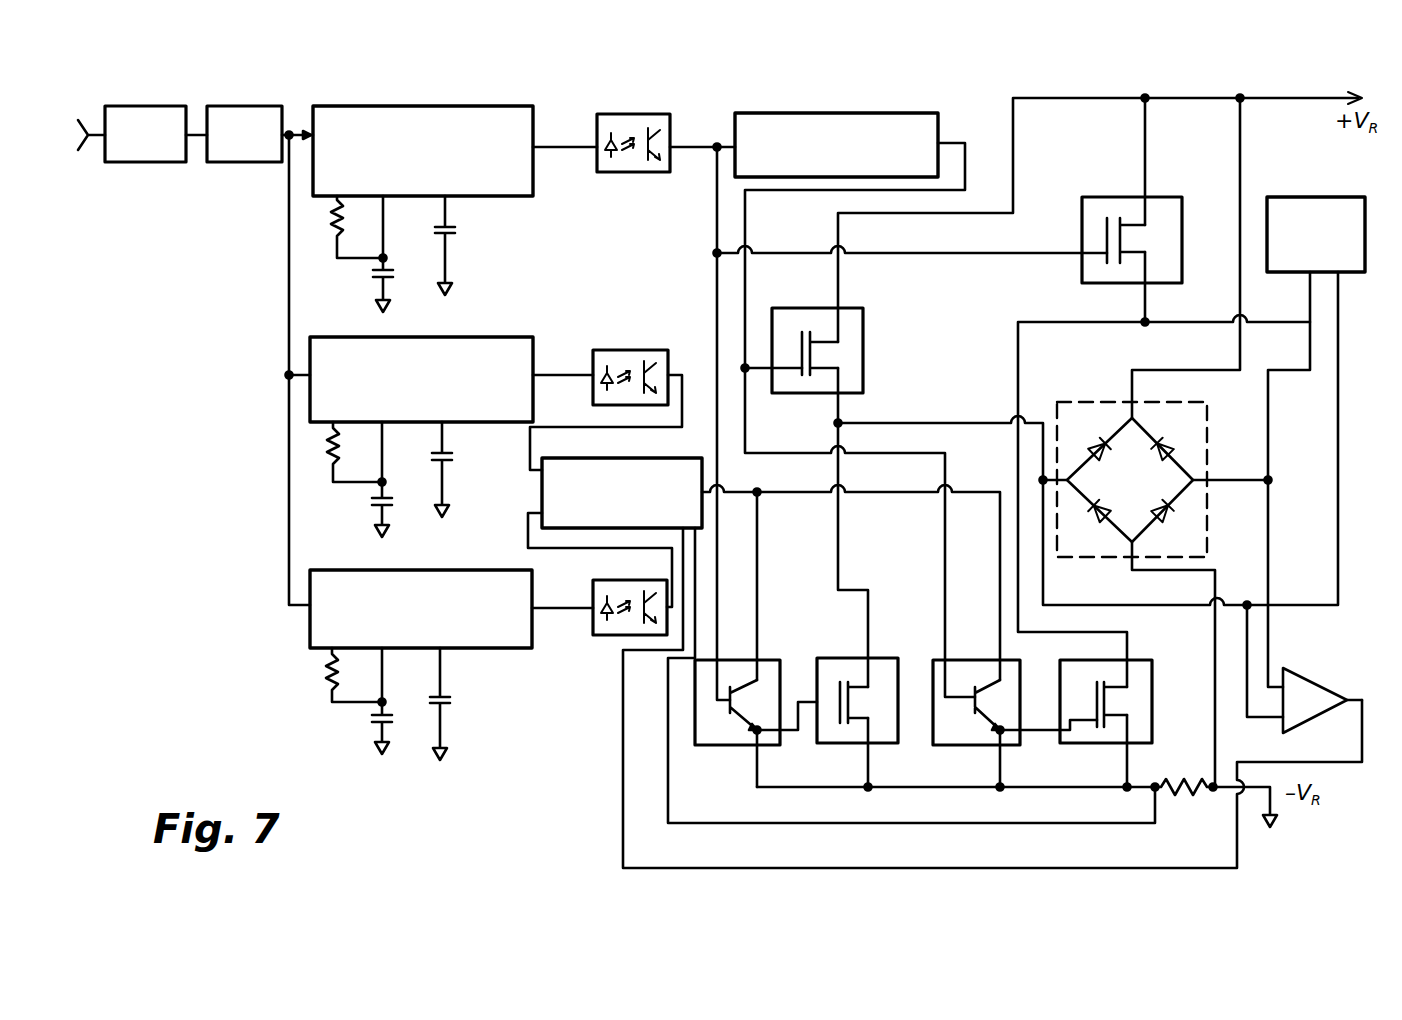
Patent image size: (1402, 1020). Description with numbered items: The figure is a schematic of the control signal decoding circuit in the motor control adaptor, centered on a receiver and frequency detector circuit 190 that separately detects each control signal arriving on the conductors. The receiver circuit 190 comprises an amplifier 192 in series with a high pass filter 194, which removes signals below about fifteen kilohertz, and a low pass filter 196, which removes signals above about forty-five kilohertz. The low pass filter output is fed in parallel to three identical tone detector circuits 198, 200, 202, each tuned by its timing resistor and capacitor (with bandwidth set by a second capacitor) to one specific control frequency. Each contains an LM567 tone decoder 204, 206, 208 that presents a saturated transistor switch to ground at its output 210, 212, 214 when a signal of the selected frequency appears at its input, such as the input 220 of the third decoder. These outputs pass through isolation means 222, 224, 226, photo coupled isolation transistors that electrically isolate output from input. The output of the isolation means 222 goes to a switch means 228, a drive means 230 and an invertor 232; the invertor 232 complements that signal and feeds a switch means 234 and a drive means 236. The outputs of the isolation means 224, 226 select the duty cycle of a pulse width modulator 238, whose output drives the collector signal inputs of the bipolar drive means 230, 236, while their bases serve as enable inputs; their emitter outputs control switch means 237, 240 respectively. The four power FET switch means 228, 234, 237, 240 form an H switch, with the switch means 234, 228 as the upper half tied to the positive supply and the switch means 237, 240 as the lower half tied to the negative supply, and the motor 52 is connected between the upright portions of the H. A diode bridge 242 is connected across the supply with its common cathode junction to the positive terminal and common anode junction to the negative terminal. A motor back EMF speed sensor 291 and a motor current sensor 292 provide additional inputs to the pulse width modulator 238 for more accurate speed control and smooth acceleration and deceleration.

The motor 52 is at (1316, 215).
The receiver and frequency detector circuit 190 is at (402, 100).
The amplifier 192 is at (90, 140).
The high pass filter 194 is at (135, 106).
The low pass filter 196 is at (240, 106).
The tone detector circuit 198 is at (437, 187).
The tone detector circuit 200 is at (449, 411).
The tone detector circuit 202 is at (421, 638).
The tone decoder 204 is at (480, 233).
The tone decoder 206 is at (478, 457).
The tone decoder 208 is at (477, 692).
The output 210 is at (540, 147).
The output 212 is at (537, 372).
The output 214 is at (538, 606).
The input 220 is at (310, 605).
The isolation means 222 is at (608, 114).
The isolation means 224 is at (603, 350).
The isolation means 226 is at (605, 635).
The switch means 228 is at (1112, 197).
The drive means 230 is at (700, 745).
The invertor 232 is at (810, 113).
The switch means 234 is at (865, 355).
The drive means 236 is at (938, 748).
The switch means 237 is at (840, 658).
The pulse width modulator 238 is at (575, 458).
The switch means 240 is at (1135, 660).
The diode bridge 242 is at (1112, 400).
The motor back EMF speed sensor 291 is at (1300, 682).
The motor current sensor 292 is at (1178, 795).